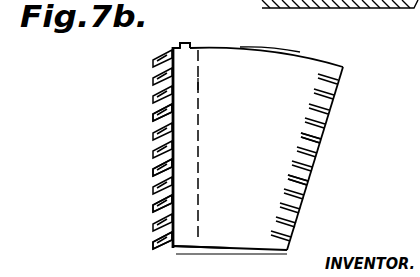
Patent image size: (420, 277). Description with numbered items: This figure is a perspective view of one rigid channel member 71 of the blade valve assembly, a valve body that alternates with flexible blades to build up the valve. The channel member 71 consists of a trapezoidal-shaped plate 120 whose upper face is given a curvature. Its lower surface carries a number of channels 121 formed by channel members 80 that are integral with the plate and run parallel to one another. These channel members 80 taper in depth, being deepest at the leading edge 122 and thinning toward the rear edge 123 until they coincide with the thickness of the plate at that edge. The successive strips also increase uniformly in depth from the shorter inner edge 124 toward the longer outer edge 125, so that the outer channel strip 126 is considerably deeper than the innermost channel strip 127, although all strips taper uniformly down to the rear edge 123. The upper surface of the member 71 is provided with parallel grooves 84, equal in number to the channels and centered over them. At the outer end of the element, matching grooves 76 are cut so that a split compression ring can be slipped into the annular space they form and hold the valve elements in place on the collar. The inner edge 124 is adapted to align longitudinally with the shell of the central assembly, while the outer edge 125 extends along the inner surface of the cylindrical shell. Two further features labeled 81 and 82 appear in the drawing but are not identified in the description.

The trapezoidal-shaped plate 120 is at (303, 62).
The leading edge 122 is at (174, 92).
The matching grooves 76 is at (184, 45).
The groove 82 is at (199, 82).
The longer outer edge 125 is at (268, 52).
The outer channel strip 126 is at (153, 60).
The tooth 81 is at (154, 110).
The channel members 80 is at (161, 168).
The channels 121 is at (161, 200).
The innermost channel strip 127 is at (158, 249).
The inner edge 124 is at (206, 241).
The rigid channel member 71 is at (341, 101).
The rear edge 123 is at (325, 146).
The parallel grooves 84 is at (310, 182).